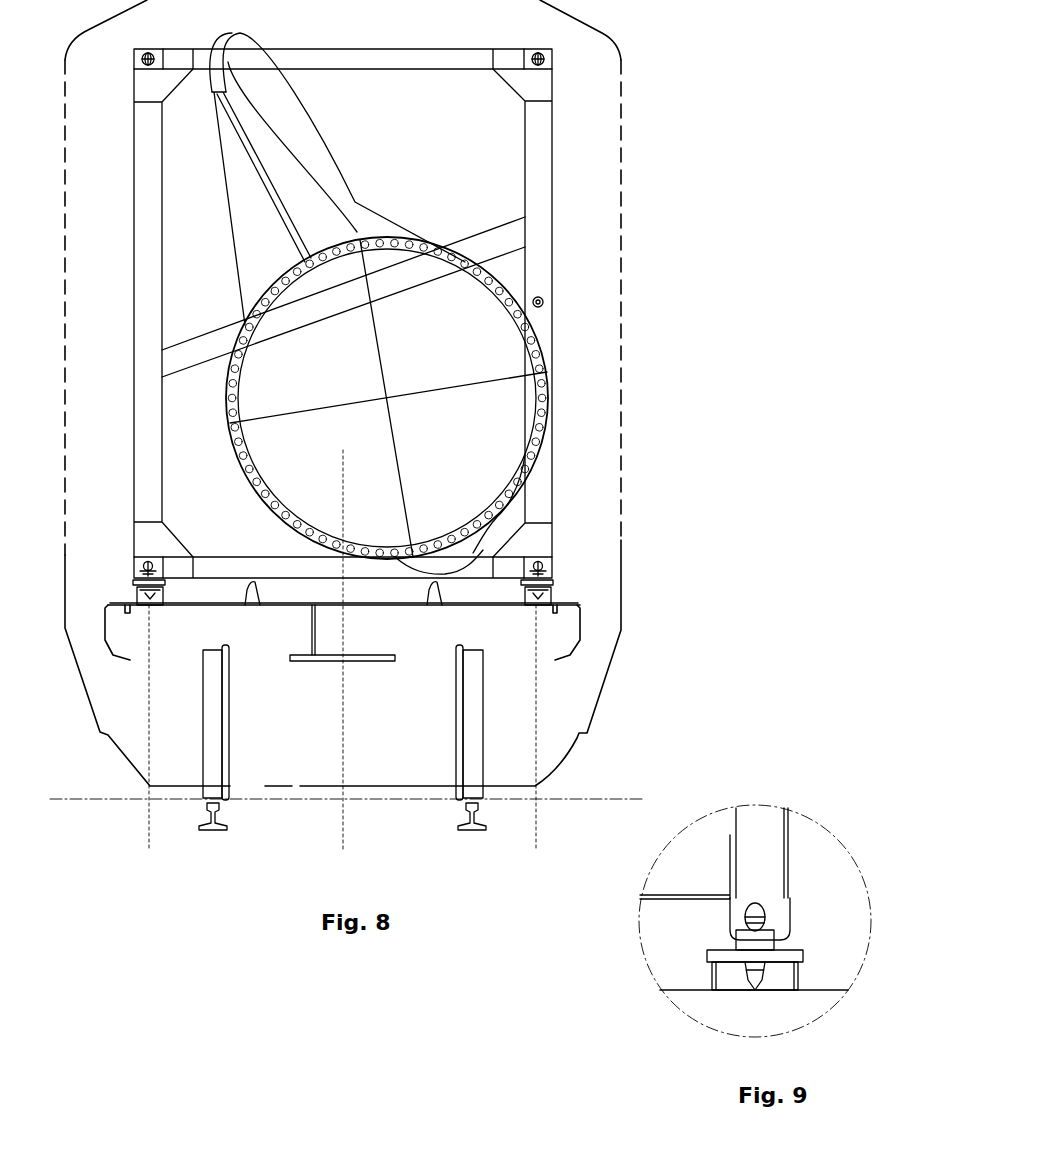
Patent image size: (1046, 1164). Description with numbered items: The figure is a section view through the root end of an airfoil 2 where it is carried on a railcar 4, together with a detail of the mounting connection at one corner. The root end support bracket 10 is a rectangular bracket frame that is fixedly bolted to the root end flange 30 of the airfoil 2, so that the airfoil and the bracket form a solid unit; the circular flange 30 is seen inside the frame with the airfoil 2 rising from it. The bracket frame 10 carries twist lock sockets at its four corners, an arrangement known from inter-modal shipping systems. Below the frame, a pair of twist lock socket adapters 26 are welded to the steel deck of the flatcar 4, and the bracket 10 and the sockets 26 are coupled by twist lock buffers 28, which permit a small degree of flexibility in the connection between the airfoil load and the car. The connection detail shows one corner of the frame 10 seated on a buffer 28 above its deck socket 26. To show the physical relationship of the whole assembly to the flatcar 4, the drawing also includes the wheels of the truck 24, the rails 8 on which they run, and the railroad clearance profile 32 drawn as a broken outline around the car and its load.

In FIG. 8, the airfoil 2 is at (345, 163).
In FIG. 8, the railcar 4 is at (582, 615).
In FIG. 8, the rails 8 is at (468, 818).
In FIG. 8, the root end support bracket 10 is at (134, 398).
In FIG. 9, the root end support bracket 10 is at (788, 830).
In FIG. 8, the truck 24 is at (483, 685).
In FIG. 8, the twist lock sockets 26 is at (135, 600).
In FIG. 9, the twist lock sockets 26 is at (805, 975).
In FIG. 8, the twist lock buffer fixed bases 28 is at (140, 566).
In FIG. 9, the twist lock buffer fixed bases 28 is at (740, 973).
In FIG. 8, the root end flange 30 is at (263, 477).
In FIG. 8, the railroad clearance profile 32 is at (85, 695).